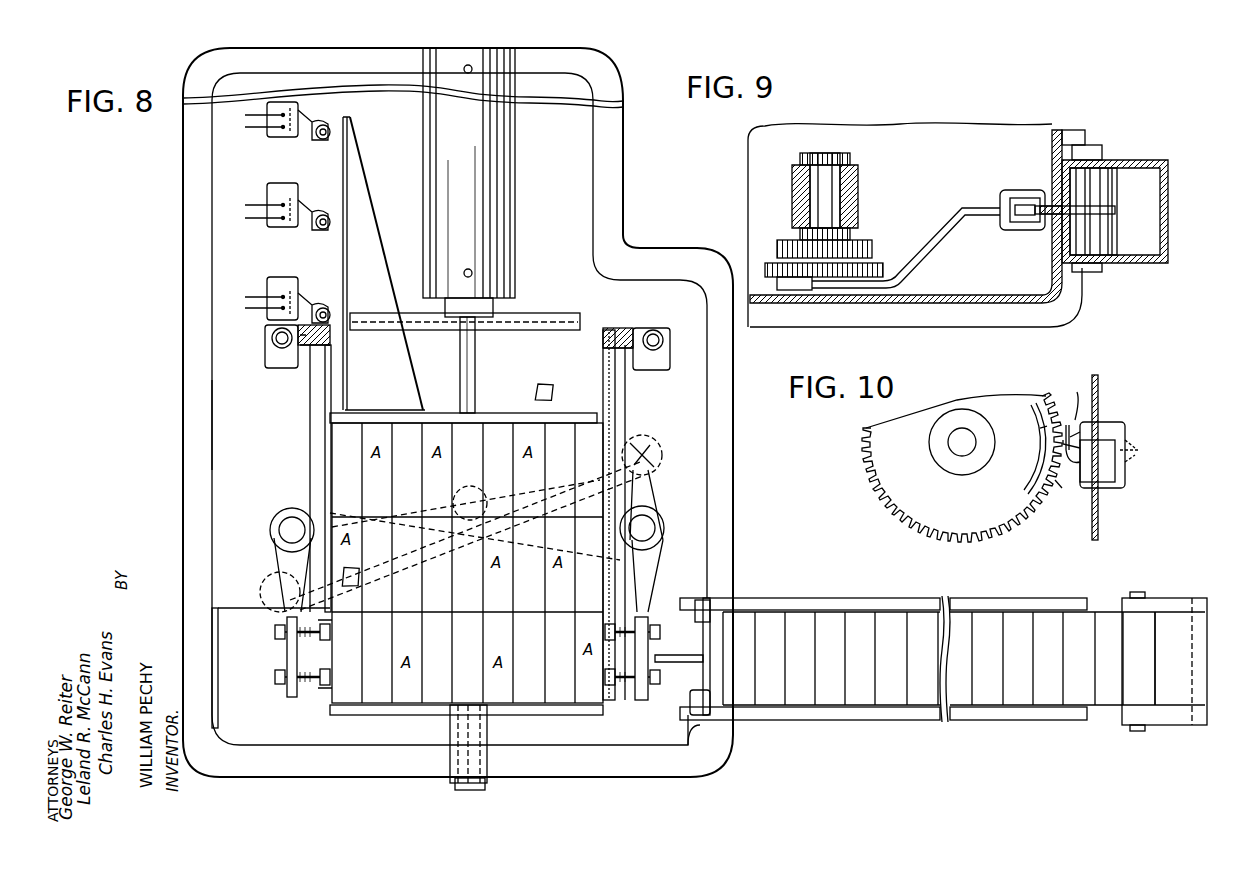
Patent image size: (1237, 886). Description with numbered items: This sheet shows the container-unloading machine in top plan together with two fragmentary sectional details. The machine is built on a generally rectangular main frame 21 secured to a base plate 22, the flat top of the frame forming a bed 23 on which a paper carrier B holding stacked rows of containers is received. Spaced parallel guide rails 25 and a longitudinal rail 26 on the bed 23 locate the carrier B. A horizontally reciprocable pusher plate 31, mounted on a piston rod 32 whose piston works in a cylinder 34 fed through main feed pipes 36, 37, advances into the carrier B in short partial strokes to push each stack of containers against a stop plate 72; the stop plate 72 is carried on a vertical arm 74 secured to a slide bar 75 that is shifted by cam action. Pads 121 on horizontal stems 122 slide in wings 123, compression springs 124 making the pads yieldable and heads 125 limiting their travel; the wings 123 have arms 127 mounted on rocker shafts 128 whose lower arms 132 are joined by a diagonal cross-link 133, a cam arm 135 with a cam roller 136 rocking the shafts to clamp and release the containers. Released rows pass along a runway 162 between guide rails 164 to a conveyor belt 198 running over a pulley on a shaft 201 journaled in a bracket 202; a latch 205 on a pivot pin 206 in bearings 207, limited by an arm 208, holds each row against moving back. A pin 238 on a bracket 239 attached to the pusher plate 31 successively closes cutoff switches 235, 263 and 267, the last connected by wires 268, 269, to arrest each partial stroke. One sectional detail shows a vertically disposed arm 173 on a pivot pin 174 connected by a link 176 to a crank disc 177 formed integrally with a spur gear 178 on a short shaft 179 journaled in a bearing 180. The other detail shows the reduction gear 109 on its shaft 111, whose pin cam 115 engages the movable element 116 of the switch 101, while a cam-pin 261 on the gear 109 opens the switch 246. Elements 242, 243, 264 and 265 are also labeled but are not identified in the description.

In FIG. 8, the main frame 21 is at (208, 457).
In FIG. 9, the main frame 21 is at (962, 305).
In FIG. 8, the base plate 22 is at (188, 418).
In FIG. 9, the base plate 22 is at (1080, 302).
In FIG. 8, the bed 23 is at (214, 390).
In FIG. 8, the guide rails 25 is at (316, 460).
In FIG. 8, the longitudinal rail 26 is at (538, 320).
In FIG. 8, the pusher plate 31 is at (517, 414).
In FIG. 8, the piston rod 32 is at (470, 368).
In FIG. 8, the cylinder 34 is at (498, 178).
In FIG. 8, the main feed pipe 36 is at (474, 273).
In FIG. 8, the main feed pipe 37 is at (463, 70).
In FIG. 8, the stop plate 72 is at (508, 714).
In FIG. 8, the vertical arm 74 is at (448, 784).
In FIG. 8, the slide bar 75 is at (468, 790).
In FIG. 8, the carrier B is at (325, 408).
In FIG. 10, the switch 101 is at (1100, 456).
In FIG. 10, the rotation reduction gear 109 is at (878, 502).
In FIG. 10, the shaft 111 is at (966, 432).
In FIG. 10, the pin cam 115 is at (1048, 452).
In FIG. 10, the movable element 116 is at (1070, 424).
In FIG. 8, the pads 121 is at (328, 640).
In FIG. 8, the stems 122 is at (306, 690).
In FIG. 8, the wings 123 is at (287, 655).
In FIG. 8, the compression springs 124 is at (306, 640).
In FIG. 8, the head 125 is at (274, 633).
In FIG. 8, the arms 127 is at (284, 562).
In FIG. 8, the rocker shafts 128 is at (292, 530).
In FIG. 8, the arms 132 is at (278, 585).
In FIG. 8, the cross-link 133 is at (408, 565).
In FIG. 8, the cam arm 135 is at (556, 549).
In FIG. 8, the cam roller 136 is at (466, 486).
In FIG. 8, the runway 162 is at (885, 612).
In FIG. 8, the guide rails 164 is at (828, 602).
In FIG. 9, the arm 173 is at (1072, 215).
In FIG. 9, the pivot pin 174 is at (1085, 150).
In FIG. 9, the link 176 is at (940, 250).
In FIG. 9, the crank disc 177 is at (878, 266).
In FIG. 9, the spur gear 178 is at (858, 242).
In FIG. 9, the short shaft 179 is at (832, 184).
In FIG. 9, the bearing 180 is at (792, 190).
In FIG. 8, the conveyor belt 198 is at (1174, 658).
In FIG. 8, the shaft 201 is at (1137, 592).
In FIG. 8, the bracket 202 is at (1160, 610).
In FIG. 8, the latch 205 is at (668, 660).
In FIG. 8, the pivot pin 206 is at (710, 600).
In FIG. 8, the bearings 207 is at (712, 606).
In FIG. 8, the arm 208 is at (690, 747).
In FIG. 8, the cutoff switch 235 is at (278, 137).
In FIG. 8, the pin 238 is at (343, 117).
In FIG. 8, the bracket 239 is at (368, 196).
In FIG. 8, the cable 242 is at (248, 114).
In FIG. 8, the switch terminals 243 is at (250, 128).
In FIG. 10, the switch 246 is at (1085, 432).
In FIG. 10, the cam-pin 261 is at (1058, 494).
In FIG. 8, the second cutoff switch 263 is at (280, 227).
In FIG. 8, the switch terminal 264 is at (262, 204).
In FIG. 8, the switch terminal 265 is at (262, 218).
In FIG. 8, the third cutoff switch 267 is at (275, 282).
In FIG. 8, the wire 268 is at (262, 297).
In FIG. 8, the wire 269 is at (262, 308).